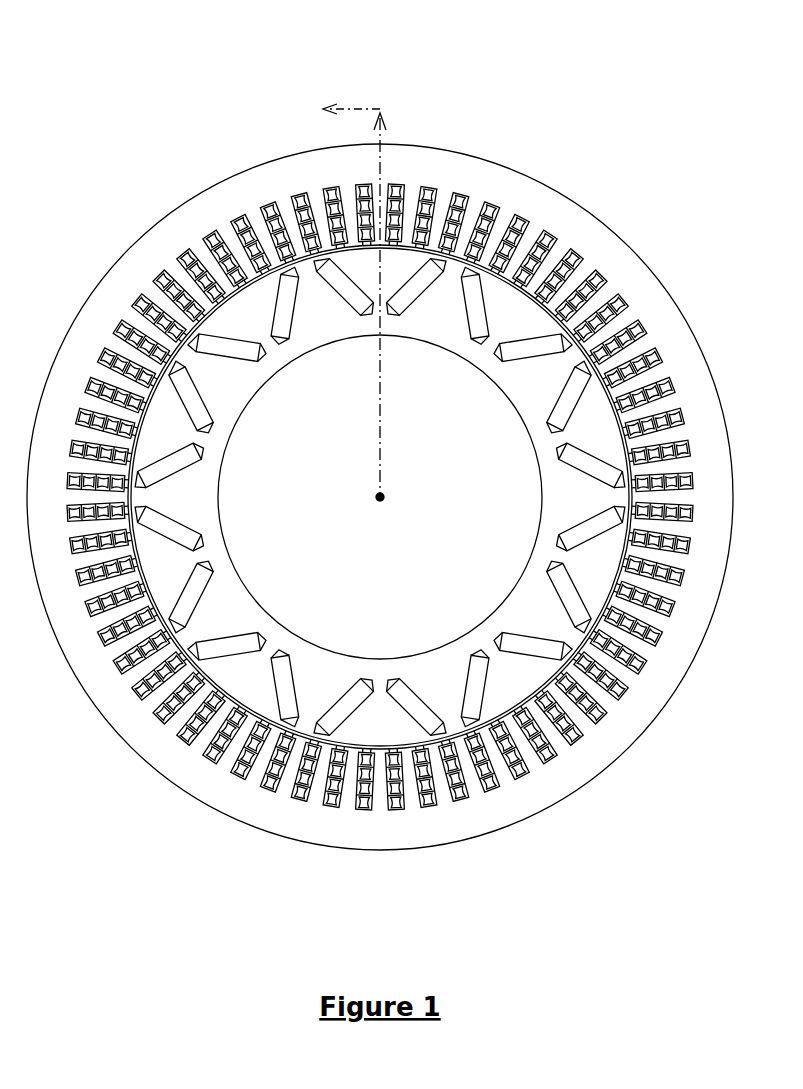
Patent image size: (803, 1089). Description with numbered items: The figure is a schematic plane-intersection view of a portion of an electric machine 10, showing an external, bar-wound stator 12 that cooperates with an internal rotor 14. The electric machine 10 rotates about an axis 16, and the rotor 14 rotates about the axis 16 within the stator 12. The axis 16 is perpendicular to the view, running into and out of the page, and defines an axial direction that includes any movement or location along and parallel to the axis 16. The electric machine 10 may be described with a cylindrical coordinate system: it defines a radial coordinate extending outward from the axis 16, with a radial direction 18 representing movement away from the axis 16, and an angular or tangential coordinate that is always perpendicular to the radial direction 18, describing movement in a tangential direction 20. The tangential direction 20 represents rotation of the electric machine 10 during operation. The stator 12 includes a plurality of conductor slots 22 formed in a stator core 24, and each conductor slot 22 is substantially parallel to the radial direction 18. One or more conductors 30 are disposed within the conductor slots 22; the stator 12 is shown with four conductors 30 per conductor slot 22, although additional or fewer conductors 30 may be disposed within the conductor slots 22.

The electric machine 10 is at (96, 79).
The stator 12 is at (583, 215).
The rotor 14 is at (448, 333).
The axis 16 is at (386, 498).
The radial direction 18 is at (385, 138).
The tangential direction 20 is at (357, 108).
The conductor slots 22 is at (313, 183).
The stator core 24 is at (647, 343).
The conductors 30 is at (240, 230).